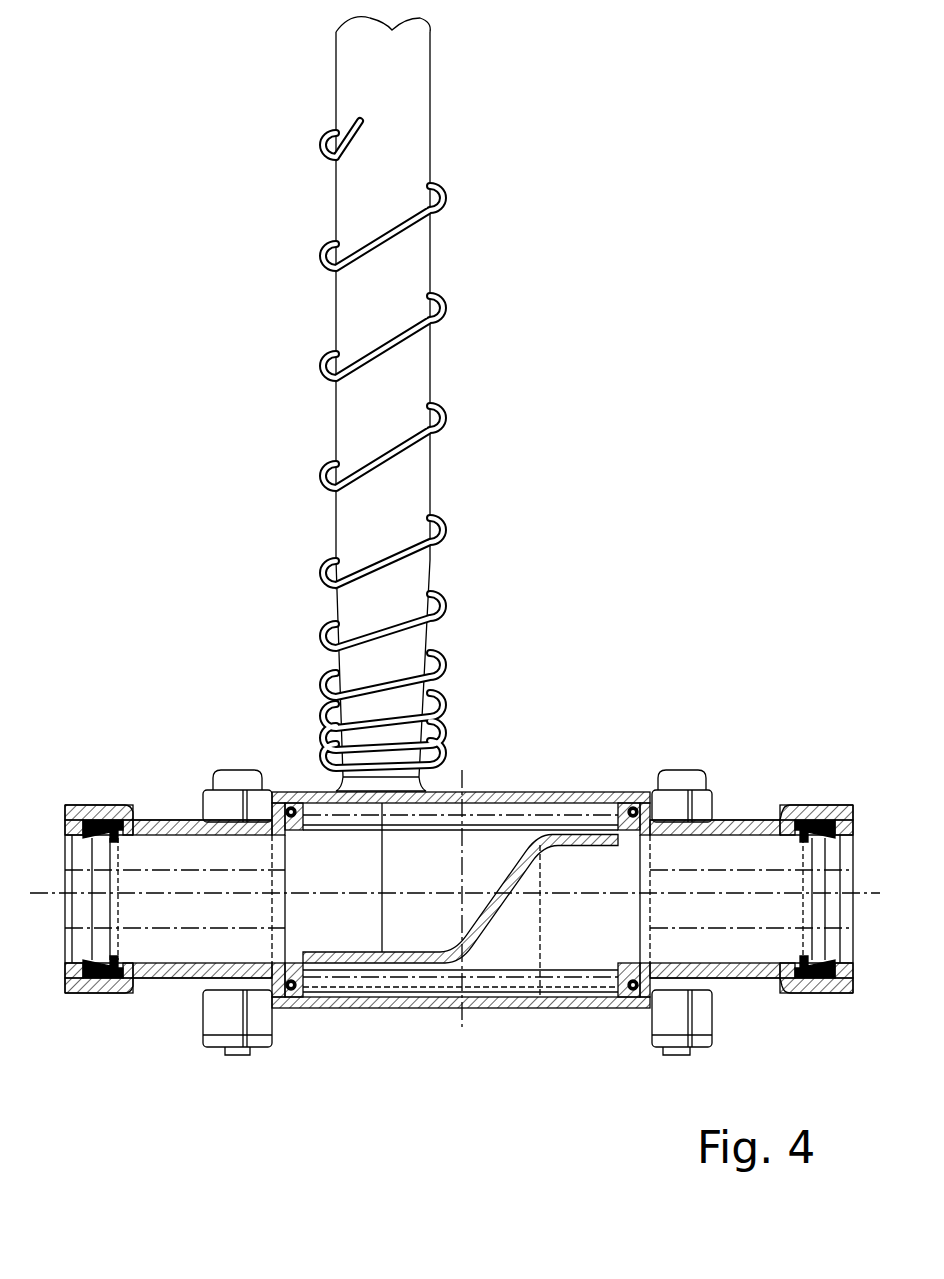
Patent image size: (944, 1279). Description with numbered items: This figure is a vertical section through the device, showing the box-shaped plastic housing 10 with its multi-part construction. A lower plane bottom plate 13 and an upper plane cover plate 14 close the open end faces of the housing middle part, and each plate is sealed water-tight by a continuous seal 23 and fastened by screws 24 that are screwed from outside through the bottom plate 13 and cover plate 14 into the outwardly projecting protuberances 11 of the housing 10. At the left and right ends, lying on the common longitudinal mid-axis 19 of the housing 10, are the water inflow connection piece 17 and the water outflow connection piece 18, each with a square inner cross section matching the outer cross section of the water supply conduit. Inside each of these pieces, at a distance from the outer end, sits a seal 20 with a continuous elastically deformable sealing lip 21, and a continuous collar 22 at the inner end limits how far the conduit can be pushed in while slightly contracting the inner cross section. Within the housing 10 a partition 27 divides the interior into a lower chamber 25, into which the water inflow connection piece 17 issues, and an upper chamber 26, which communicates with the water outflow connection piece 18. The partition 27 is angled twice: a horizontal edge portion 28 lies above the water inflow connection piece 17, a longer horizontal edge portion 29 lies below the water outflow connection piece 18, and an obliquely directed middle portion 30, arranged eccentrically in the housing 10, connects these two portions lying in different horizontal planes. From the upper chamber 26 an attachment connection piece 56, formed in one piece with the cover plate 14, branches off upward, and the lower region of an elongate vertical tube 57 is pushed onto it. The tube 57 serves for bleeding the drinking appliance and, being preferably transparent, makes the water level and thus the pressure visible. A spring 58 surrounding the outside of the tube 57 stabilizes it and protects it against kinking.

The housing 10 is at (278, 753).
The protuberance 11 is at (718, 812).
The bottom plate 13 is at (407, 1008).
The cover plate 14 is at (600, 792).
The water inflow connection piece 17 is at (755, 818).
The water outflow connection piece 18 is at (182, 978).
The longitudinal mid-axis 19 is at (248, 893).
The seal 20 is at (105, 803).
The sealing lip 21 is at (827, 848).
The collar 22 is at (637, 957).
The seal 23 is at (635, 800).
The screw 24 is at (698, 783).
The lower chamber 25 is at (566, 942).
The upper chamber 26 is at (318, 875).
The partition 27 is at (425, 937).
The edge portion 28 is at (556, 792).
The edge portion 29 is at (350, 963).
The middle portion 30 is at (503, 927).
The attachment connection piece 56 is at (420, 786).
The tube 57 is at (407, 508).
The spring 58 is at (417, 450).